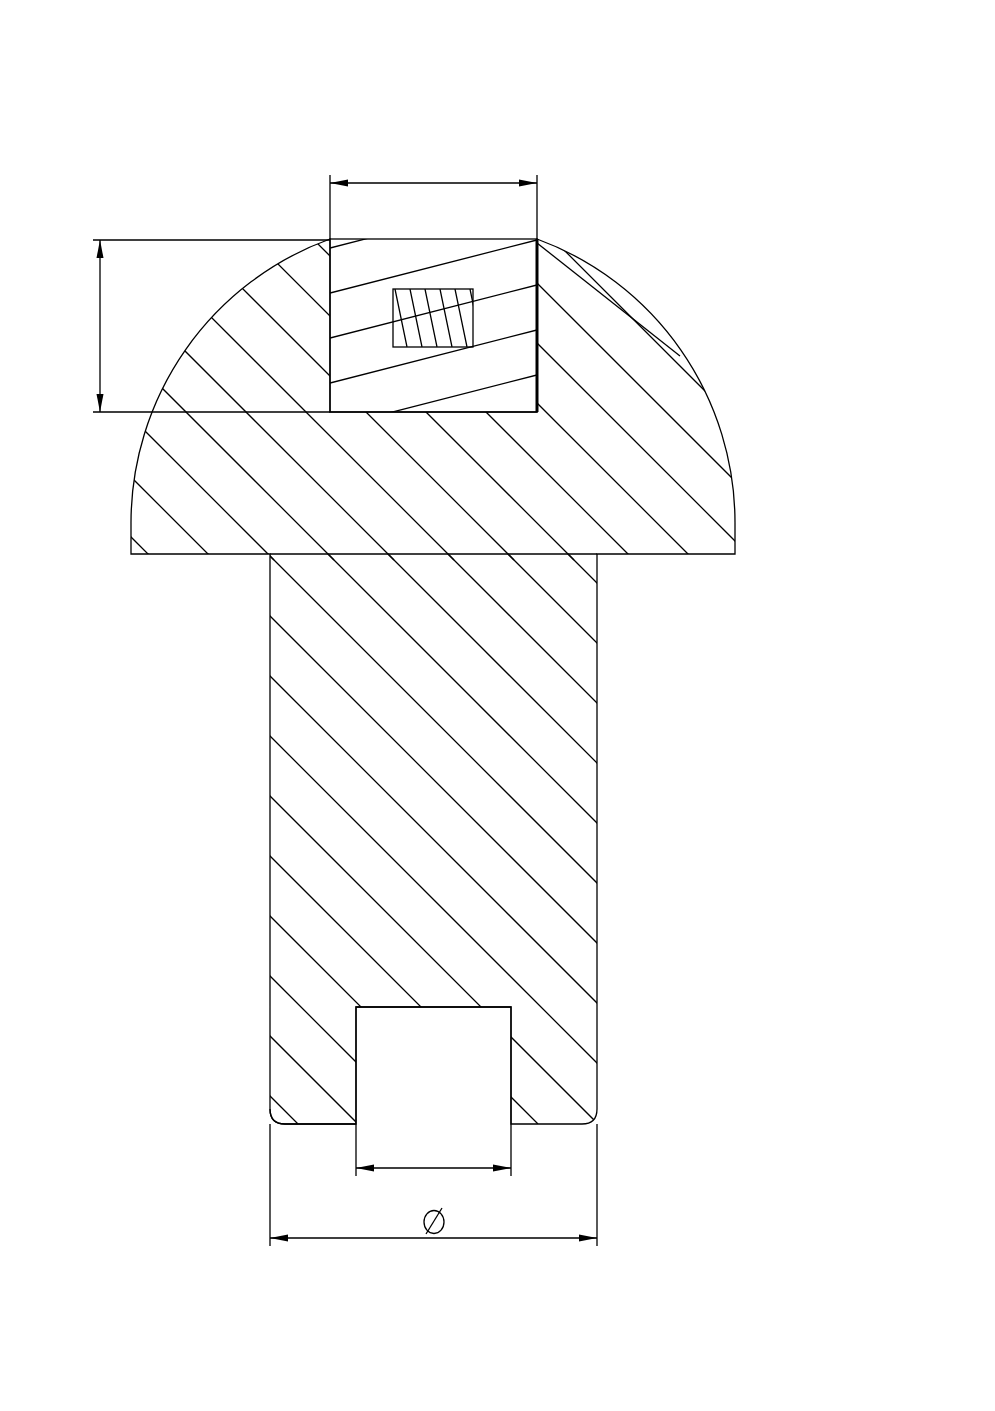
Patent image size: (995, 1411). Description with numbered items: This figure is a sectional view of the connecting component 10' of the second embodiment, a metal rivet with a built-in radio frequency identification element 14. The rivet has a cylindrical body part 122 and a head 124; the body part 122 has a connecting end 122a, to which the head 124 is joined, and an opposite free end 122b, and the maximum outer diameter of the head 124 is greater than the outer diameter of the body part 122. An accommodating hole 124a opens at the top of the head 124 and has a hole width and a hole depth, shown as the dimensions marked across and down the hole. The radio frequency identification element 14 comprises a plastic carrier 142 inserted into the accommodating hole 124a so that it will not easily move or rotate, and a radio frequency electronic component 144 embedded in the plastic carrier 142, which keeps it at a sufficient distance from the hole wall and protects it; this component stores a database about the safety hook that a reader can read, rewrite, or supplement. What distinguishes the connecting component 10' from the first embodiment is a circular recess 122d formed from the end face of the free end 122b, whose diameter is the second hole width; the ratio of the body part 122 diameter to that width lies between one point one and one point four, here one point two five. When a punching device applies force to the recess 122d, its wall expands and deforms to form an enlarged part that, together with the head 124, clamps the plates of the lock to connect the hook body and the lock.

The connecting component 10' is at (497, 696).
The radio frequency identification element 14 is at (591, 334).
The plastic carrier 142 is at (500, 370).
The radio frequency electronic component 144 is at (453, 323).
The body part 122 is at (523, 711).
The connecting end 122a is at (432, 557).
The free end 122b is at (298, 1094).
The recess 122d is at (450, 1008).
The head 124 is at (703, 487).
The accommodating hole 124a is at (537, 260).